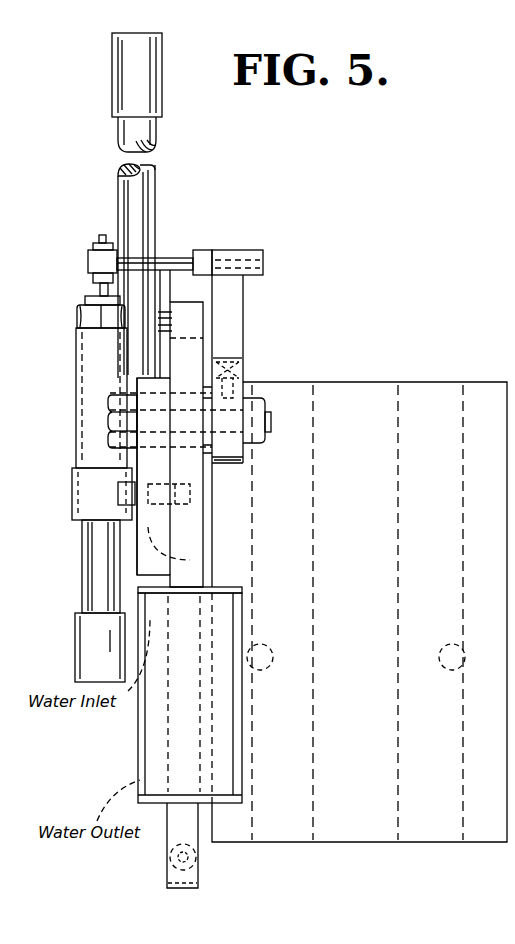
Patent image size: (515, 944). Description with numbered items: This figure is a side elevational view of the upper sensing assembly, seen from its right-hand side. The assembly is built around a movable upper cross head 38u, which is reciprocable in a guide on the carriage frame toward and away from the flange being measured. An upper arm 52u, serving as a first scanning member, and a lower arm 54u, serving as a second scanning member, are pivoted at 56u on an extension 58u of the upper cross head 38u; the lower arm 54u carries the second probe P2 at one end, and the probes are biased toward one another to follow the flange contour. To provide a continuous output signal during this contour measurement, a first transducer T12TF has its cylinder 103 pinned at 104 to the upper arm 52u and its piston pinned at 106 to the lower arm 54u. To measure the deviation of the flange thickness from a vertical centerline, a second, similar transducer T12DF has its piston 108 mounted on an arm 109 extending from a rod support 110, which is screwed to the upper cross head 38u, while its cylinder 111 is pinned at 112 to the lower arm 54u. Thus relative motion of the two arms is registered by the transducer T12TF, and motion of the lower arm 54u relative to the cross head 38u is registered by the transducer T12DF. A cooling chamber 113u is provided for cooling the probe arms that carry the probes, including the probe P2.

The transducer T12TF is at (160, 184).
The arm 109 is at (176, 257).
The cylinder 103 is at (198, 262).
The rod support 110 is at (244, 300).
The piston 108 is at (96, 283).
The cylinder 111 is at (75, 350).
The pivot 56u is at (112, 421).
The lower arm 54u is at (112, 462).
The transducer T12DF is at (82, 585).
The upper arm 52u is at (198, 355).
The pin 104 is at (163, 322).
The extension 58u is at (240, 448).
The pin 112 is at (192, 493).
The pin 106 is at (190, 560).
The upper cross head 38u is at (359, 632).
The cooling chamber 113u is at (138, 722).
The second probe P2 is at (199, 876).